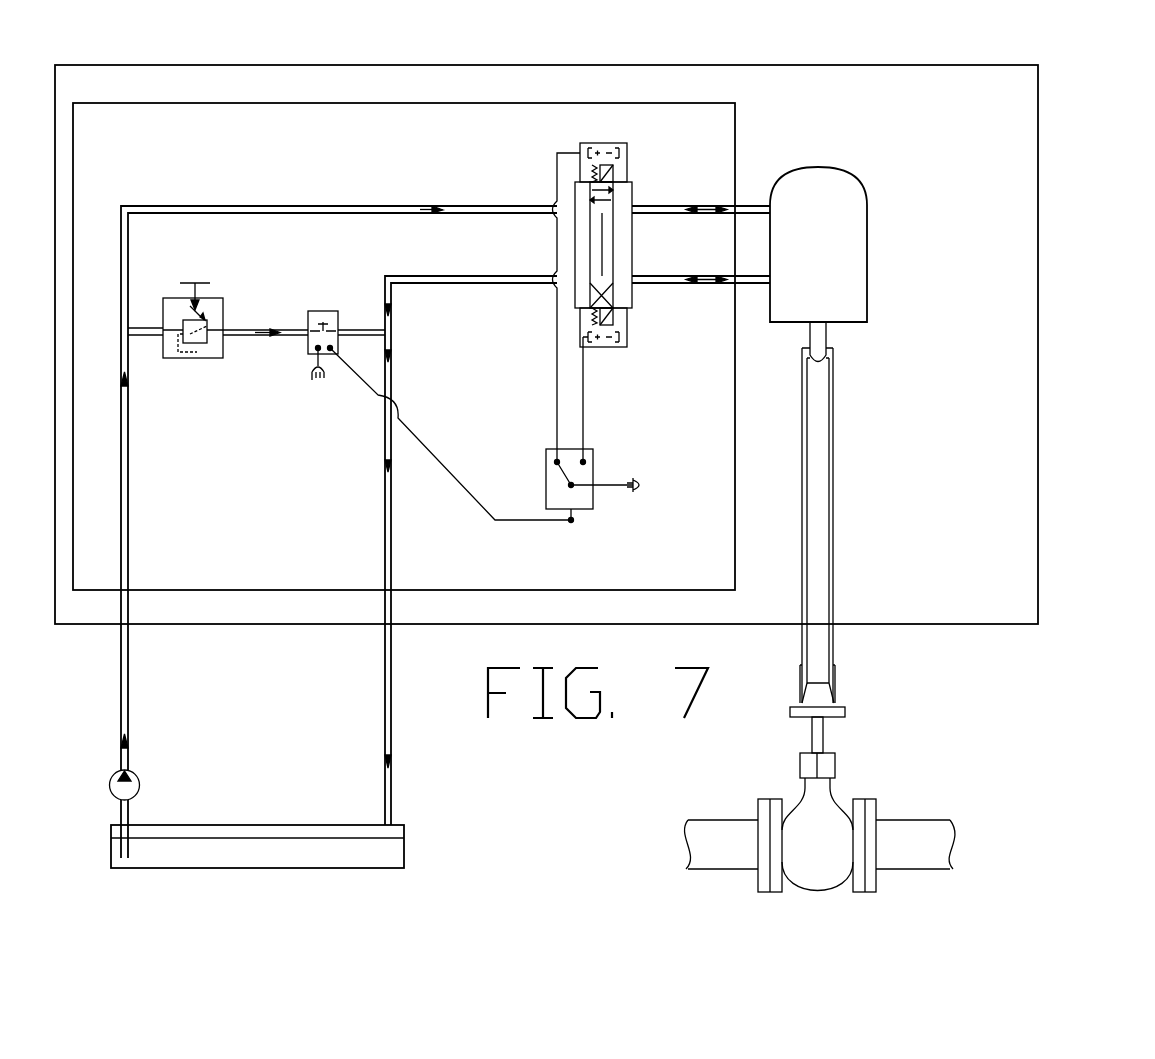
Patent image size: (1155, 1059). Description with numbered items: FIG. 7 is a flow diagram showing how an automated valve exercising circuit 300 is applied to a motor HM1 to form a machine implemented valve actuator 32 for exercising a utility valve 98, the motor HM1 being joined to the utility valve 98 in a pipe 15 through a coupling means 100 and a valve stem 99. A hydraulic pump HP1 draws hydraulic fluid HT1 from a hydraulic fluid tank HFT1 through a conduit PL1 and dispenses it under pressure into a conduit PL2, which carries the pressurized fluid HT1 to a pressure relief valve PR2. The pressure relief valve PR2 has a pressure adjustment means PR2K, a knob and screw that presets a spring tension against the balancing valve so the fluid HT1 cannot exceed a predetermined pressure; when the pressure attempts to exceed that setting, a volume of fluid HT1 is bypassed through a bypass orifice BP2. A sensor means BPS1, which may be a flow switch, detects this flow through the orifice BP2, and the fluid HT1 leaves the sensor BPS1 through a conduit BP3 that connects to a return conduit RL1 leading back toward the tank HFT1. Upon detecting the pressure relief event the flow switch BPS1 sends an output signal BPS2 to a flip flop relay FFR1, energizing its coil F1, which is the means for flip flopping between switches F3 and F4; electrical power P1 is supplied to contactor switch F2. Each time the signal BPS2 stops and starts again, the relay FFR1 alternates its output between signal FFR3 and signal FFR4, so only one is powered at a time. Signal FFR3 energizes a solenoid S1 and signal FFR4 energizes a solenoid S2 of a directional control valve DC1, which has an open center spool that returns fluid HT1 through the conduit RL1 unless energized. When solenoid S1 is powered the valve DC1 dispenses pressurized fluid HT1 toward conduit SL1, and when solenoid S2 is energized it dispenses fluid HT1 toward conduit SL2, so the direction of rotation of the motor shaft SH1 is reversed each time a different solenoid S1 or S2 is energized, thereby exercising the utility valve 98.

The valve actuator 32 is at (1038, 422).
The automated valve exercising circuit 300 is at (737, 140).
The conduit PL2 is at (125, 352).
The conduit PL1 is at (123, 813).
The hydraulic pump HP1 is at (113, 790).
The hydraulic fluid tank HFT1 is at (272, 870).
The hydraulic fluid HT1 is at (233, 852).
The return conduit RL1 is at (508, 285).
The pressure relief valve PR2 is at (177, 360).
The pressure adjustment means PR2K is at (205, 282).
The bypass orifice BP2 is at (275, 330).
The conduit BP3 is at (360, 328).
The sensor means BPS1 is at (306, 345).
The electrical power P1 is at (645, 487).
The output signal BPS2 is at (440, 462).
The directional control valve DC1 is at (627, 237).
The solenoid S1 is at (623, 147).
The solenoid S2 is at (628, 345).
The conduit SL1 is at (655, 210).
The conduit SL2 is at (667, 280).
The motor HM1 is at (857, 258).
The shaft SH1 is at (828, 338).
The coupling means 100 is at (835, 643).
The valve stem 99 is at (823, 735).
The utility valve 98 is at (795, 800).
The pipe 15 is at (690, 855).
The flip flop relay FFR1 is at (593, 500).
The output signal FFR3 is at (557, 420).
The output signal FFR4 is at (585, 422).
The coil F1 is at (571, 520).
The contactor switch F2 is at (571, 485).
The switch F3 is at (557, 462).
The switch F4 is at (583, 462).